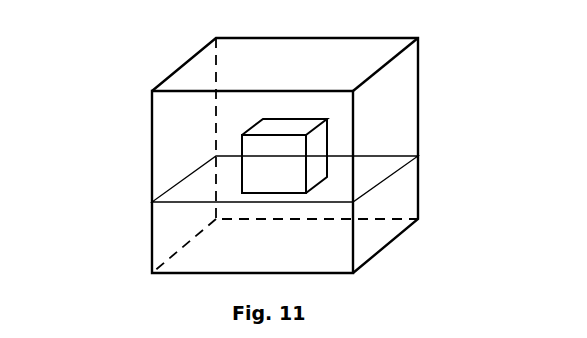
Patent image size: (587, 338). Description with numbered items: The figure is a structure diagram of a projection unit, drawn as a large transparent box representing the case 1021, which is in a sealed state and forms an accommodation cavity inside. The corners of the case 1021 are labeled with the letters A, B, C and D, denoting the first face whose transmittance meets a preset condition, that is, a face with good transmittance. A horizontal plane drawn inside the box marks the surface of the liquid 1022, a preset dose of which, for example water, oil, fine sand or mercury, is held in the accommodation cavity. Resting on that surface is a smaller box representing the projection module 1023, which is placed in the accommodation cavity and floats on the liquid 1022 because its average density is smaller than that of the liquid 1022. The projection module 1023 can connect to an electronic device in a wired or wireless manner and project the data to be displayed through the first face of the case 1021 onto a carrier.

The case 1021 is at (177, 68).
The liquid 1022 is at (180, 182).
The projection module 1023 is at (308, 160).